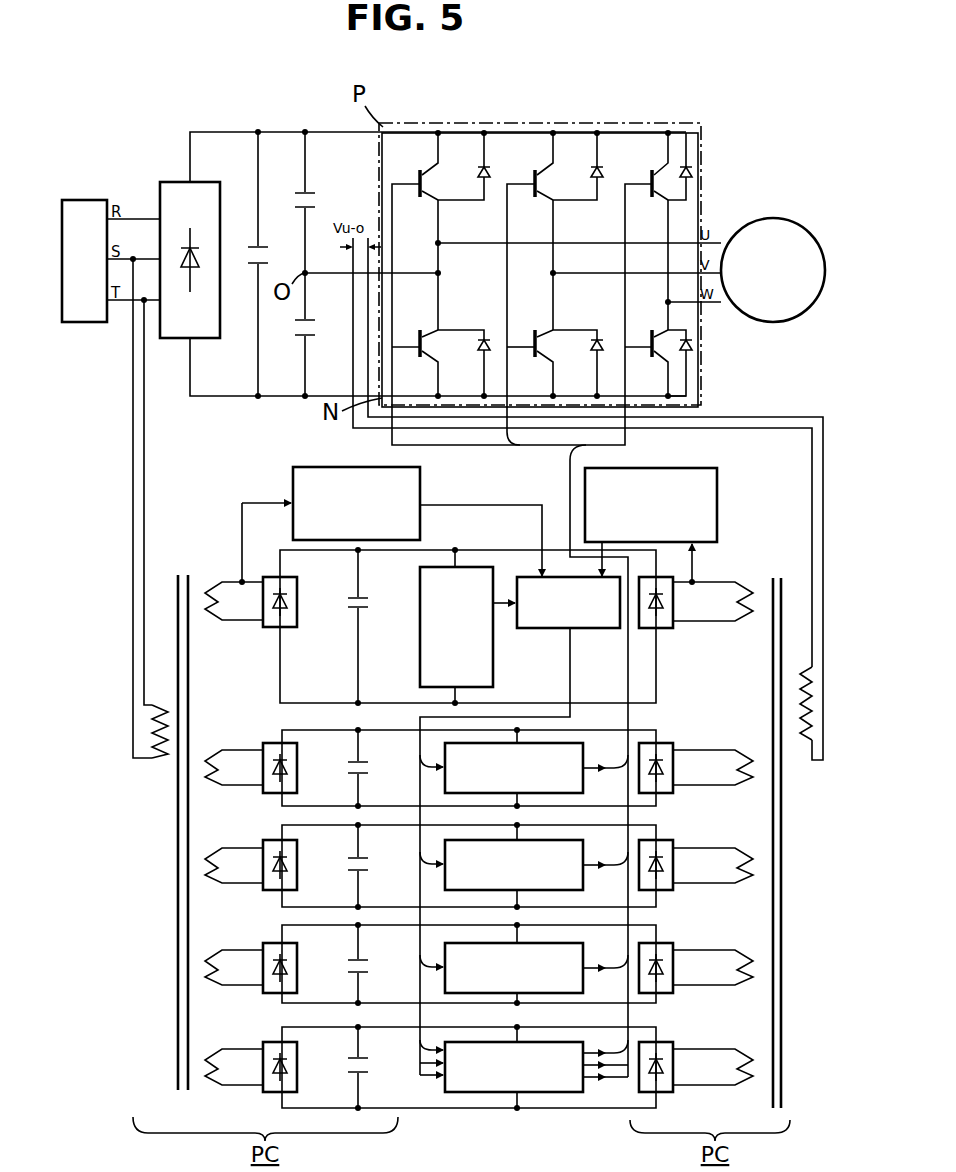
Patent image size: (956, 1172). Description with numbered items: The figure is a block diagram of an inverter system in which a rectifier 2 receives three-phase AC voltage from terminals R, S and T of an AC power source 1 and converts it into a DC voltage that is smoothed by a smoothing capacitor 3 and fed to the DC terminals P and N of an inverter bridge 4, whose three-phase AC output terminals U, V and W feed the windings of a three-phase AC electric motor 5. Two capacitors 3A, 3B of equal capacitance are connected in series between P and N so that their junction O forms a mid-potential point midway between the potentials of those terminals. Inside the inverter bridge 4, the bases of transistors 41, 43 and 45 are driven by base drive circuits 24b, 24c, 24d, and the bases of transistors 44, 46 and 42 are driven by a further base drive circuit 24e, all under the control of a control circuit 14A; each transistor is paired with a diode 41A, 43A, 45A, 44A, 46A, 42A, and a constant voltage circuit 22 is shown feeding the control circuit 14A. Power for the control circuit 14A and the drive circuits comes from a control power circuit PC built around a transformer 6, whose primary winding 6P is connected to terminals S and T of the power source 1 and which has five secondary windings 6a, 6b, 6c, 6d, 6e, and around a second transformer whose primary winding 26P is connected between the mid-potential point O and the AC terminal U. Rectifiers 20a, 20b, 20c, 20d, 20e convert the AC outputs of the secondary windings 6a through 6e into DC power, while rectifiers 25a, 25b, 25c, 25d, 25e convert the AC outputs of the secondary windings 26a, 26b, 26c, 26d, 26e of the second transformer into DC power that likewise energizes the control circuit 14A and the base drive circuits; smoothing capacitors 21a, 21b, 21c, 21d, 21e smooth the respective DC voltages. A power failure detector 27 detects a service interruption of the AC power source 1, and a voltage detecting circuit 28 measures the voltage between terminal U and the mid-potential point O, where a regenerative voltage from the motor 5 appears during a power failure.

The AC power source 1 is at (89, 200).
The rectifier 2 is at (178, 183).
The smoothing capacitor 3 is at (270, 260).
The capacitor 3A is at (315, 199).
The capacitor 3B is at (318, 328).
The inverter bridge 4 is at (589, 122).
The three-phase AC electric motor 5 is at (770, 219).
The transformer 6 is at (183, 575).
The primary winding 6P is at (162, 742).
The secondary winding 6a is at (229, 612).
The secondary winding 6b is at (228, 775).
The secondary winding 6c is at (228, 873).
The secondary winding 6d is at (228, 976).
The secondary winding 6e is at (228, 1076).
The control circuit 14A is at (548, 629).
The rectifier 20a is at (297, 592).
The rectifier 20b is at (297, 768).
The rectifier 20c is at (297, 865).
The rectifier 20d is at (297, 967).
The rectifier 20e is at (297, 1066).
The smoothing capacitor 21a is at (366, 598).
The smoothing capacitor 21b is at (366, 770).
The smoothing capacitor 21c is at (366, 866).
The smoothing capacitor 21d is at (366, 967).
The smoothing capacitor 21e is at (366, 1067).
The constant voltage circuit 22 is at (420, 660).
The base drive circuit 24b is at (445, 780).
The base drive circuit 24c is at (445, 877).
The base drive circuit 24d is at (445, 979).
The base drive circuit 24e is at (445, 1080).
The rectifier 25a is at (662, 629).
The rectifier 25b is at (660, 743).
The rectifier 25c is at (662, 840).
The rectifier 25d is at (662, 943).
The rectifier 25e is at (664, 1042).
The secondary winding 26a is at (713, 601).
The secondary winding 26b is at (713, 767).
The secondary winding 26c is at (713, 865).
The secondary winding 26d is at (713, 967).
The secondary winding 26e is at (713, 1067).
The primary winding 26P is at (798, 722).
The power failure detector 27 is at (364, 468).
The voltage detecting circuit 28 is at (682, 469).
The transistor 41 is at (421, 181).
The diode 41A is at (487, 189).
The transistor 42 is at (653, 335).
The diode 42A is at (692, 347).
The transistor 43 is at (536, 181).
The diode 43A is at (600, 189).
The transistor 44 is at (421, 335).
The diode 44A is at (490, 343).
The transistor 45 is at (653, 181).
The diode 45A is at (692, 170).
The transistor 46 is at (536, 335).
The diode 46A is at (603, 343).